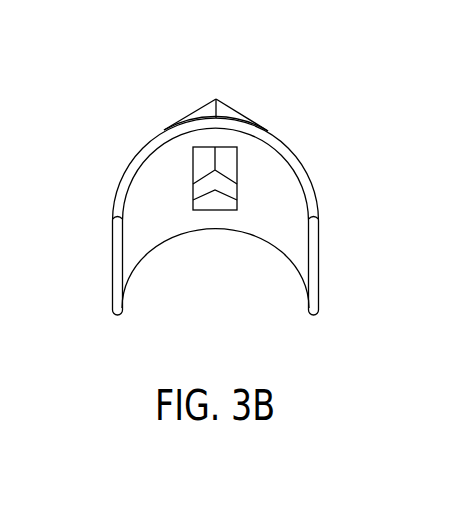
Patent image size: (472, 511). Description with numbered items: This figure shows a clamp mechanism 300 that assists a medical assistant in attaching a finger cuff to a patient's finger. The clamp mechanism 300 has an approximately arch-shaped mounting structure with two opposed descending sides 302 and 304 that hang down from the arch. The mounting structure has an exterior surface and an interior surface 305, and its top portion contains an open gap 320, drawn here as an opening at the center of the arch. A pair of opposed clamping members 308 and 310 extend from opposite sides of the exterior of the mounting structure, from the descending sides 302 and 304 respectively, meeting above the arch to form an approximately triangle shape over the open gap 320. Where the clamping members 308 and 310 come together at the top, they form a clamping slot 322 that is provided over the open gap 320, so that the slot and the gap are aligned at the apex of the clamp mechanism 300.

The clamp mechanism 300 is at (100, 132).
The descending side 302 is at (314, 190).
The descending side 304 is at (118, 187).
The interior surface 305 is at (132, 263).
The clamping member 308 is at (250, 119).
The clamping member 310 is at (190, 113).
The open gap 320 is at (215, 192).
The clamping slot 322 is at (217, 92).